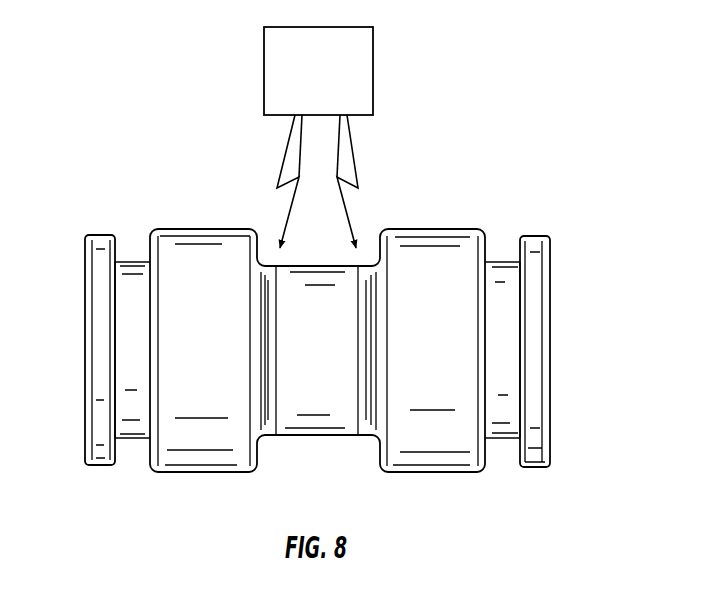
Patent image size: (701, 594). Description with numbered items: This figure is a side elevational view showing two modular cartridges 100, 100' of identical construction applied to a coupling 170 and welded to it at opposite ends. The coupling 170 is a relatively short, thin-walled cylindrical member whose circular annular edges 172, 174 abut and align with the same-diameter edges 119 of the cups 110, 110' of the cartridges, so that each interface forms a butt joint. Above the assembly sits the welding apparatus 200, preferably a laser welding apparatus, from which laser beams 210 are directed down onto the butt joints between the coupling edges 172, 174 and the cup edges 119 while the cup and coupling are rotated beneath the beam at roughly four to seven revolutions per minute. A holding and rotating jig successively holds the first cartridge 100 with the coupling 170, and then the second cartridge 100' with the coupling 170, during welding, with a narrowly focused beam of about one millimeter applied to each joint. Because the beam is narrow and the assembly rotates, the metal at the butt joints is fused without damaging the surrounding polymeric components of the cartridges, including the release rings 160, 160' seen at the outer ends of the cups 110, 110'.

The modular cartridge 100 is at (206, 309).
The modular cartridge 100' is at (443, 326).
The cup 110 is at (220, 487).
The cup 110' is at (432, 487).
The edge 119 is at (357, 357).
The release ring 160 is at (68, 328).
The release ring 160' is at (562, 333).
The coupling 170 is at (318, 372).
The circular annular edge 172 is at (268, 307).
The circular annular edge 174 is at (358, 402).
The welding apparatus 200 is at (373, 62).
The laser beam 210 is at (287, 218).